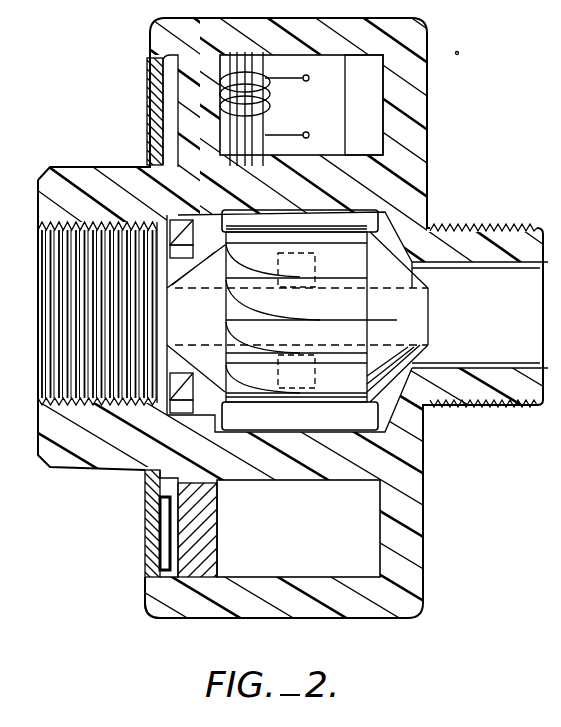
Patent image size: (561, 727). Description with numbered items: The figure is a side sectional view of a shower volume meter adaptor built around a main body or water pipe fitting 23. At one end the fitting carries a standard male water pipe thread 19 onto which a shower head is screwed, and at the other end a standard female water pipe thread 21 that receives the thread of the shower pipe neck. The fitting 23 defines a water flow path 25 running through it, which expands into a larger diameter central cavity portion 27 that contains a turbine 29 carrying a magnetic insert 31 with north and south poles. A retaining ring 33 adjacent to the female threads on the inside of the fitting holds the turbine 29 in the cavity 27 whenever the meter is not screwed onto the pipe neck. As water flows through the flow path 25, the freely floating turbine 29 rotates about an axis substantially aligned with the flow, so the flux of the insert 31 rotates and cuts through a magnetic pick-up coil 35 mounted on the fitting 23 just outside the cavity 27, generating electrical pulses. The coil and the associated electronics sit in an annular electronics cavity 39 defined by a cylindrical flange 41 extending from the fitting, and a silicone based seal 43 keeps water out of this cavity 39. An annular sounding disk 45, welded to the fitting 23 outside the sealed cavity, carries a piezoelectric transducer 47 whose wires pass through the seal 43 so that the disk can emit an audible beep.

The male water pipe thread 19 is at (490, 408).
The female water pipe thread 21 is at (88, 224).
The water pipe fitting 23 is at (410, 467).
The water flow path 25 is at (527, 334).
The central cavity portion 27 is at (383, 228).
The turbine 29 is at (422, 318).
The magnetic insert 31 is at (318, 258).
The retaining ring 33 is at (183, 222).
The magnetic pick-up coil 35 is at (290, 80).
The electronics cavity 39 is at (298, 528).
The cylindrical flange 41 is at (160, 608).
The silicone based seal 43 is at (218, 503).
The annular sounding disk 45 is at (146, 97).
The piezoelectric transducer 47 is at (163, 530).